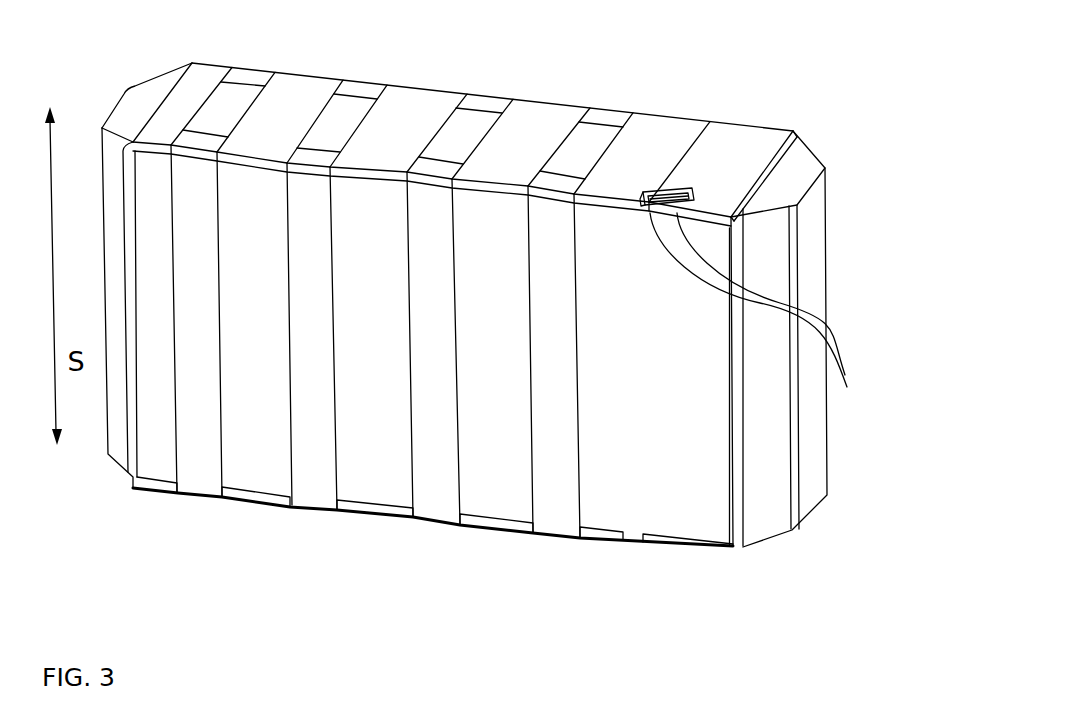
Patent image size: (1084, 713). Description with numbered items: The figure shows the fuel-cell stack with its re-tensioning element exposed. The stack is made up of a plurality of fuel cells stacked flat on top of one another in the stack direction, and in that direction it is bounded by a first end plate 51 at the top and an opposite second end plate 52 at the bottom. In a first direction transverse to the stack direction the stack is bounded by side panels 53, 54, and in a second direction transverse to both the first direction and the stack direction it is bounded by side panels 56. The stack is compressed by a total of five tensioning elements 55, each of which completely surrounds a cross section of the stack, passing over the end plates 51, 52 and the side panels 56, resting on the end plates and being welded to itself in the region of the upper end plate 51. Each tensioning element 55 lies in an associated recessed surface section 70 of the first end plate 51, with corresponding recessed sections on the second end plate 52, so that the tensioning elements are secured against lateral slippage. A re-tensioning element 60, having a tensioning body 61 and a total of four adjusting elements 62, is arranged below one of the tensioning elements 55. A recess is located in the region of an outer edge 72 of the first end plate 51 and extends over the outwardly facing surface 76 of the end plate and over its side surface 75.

The first end plate 51 is at (763, 138).
The second end plate 52 is at (725, 556).
The side panel 53 is at (150, 92).
The side panel 54 is at (808, 250).
The tensioning element 55 is at (253, 82).
The side panel 56 is at (385, 422).
The re-tensioning element 60 is at (665, 197).
The tensioning body 61 is at (668, 197).
The adjusting element 62 is at (759, 314).
The recessed surface section 70 is at (712, 133).
The outer edge 72 is at (160, 147).
The side surface 75 is at (128, 150).
The outwardly facing surface 76 is at (208, 74).